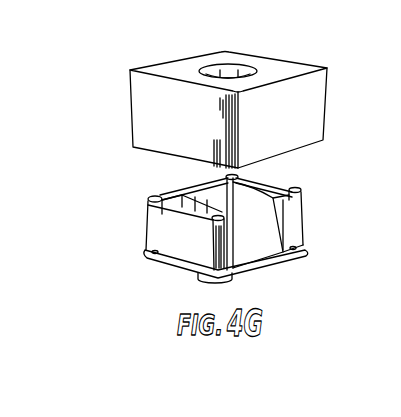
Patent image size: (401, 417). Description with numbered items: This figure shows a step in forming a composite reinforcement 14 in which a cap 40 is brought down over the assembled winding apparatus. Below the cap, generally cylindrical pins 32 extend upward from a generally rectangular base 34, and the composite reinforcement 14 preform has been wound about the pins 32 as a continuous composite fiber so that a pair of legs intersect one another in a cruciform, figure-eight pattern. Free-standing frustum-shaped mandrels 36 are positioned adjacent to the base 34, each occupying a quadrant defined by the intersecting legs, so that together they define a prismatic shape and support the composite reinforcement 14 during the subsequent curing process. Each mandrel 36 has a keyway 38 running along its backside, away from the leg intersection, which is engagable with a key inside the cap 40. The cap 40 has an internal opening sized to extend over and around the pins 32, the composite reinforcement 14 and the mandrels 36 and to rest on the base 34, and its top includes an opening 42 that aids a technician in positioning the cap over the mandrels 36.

The composite reinforcement 14 is at (190, 247).
The pins 32 is at (280, 199).
The base 34 is at (308, 251).
The mandrel 36 is at (183, 208).
The keyway 38 is at (267, 258).
The cap 40 is at (308, 113).
The opening 42 is at (238, 65).